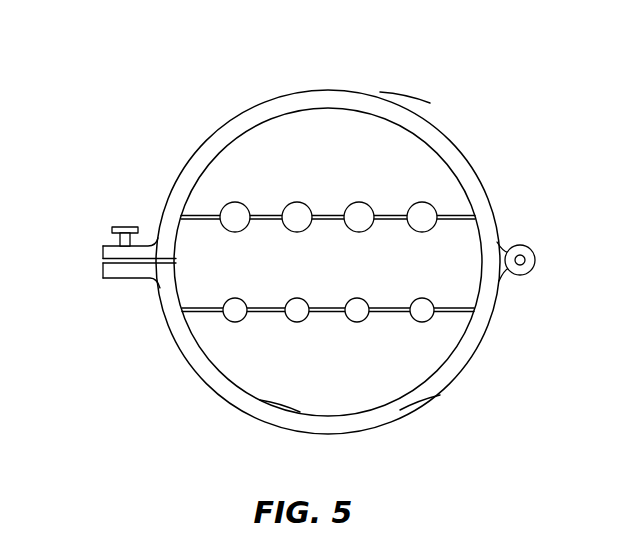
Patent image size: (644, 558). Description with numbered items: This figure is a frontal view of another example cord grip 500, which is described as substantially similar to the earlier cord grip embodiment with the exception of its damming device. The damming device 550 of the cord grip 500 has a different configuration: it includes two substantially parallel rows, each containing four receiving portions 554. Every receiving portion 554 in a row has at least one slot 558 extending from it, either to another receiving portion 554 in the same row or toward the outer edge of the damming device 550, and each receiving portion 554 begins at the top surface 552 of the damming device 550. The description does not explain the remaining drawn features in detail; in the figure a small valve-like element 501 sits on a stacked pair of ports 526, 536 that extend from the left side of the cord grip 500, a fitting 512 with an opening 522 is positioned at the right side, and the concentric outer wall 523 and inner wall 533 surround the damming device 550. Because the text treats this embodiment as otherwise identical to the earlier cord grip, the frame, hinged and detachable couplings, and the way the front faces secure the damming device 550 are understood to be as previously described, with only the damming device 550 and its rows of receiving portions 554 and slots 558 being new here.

The cord grip 500 is at (531, 65).
The valve 501 is at (126, 226).
The fitting 512 is at (523, 257).
The fitting opening 522 is at (524, 276).
The outer wall 523 is at (402, 108).
The upper inlet tube 526 is at (100, 252).
The inner wall 533 is at (420, 399).
The lower inlet tube 536 is at (100, 271).
The damming device 550 is at (281, 378).
The top surface 552 is at (329, 172).
The receiving portions 554 is at (366, 202).
The slot 558 is at (323, 312).